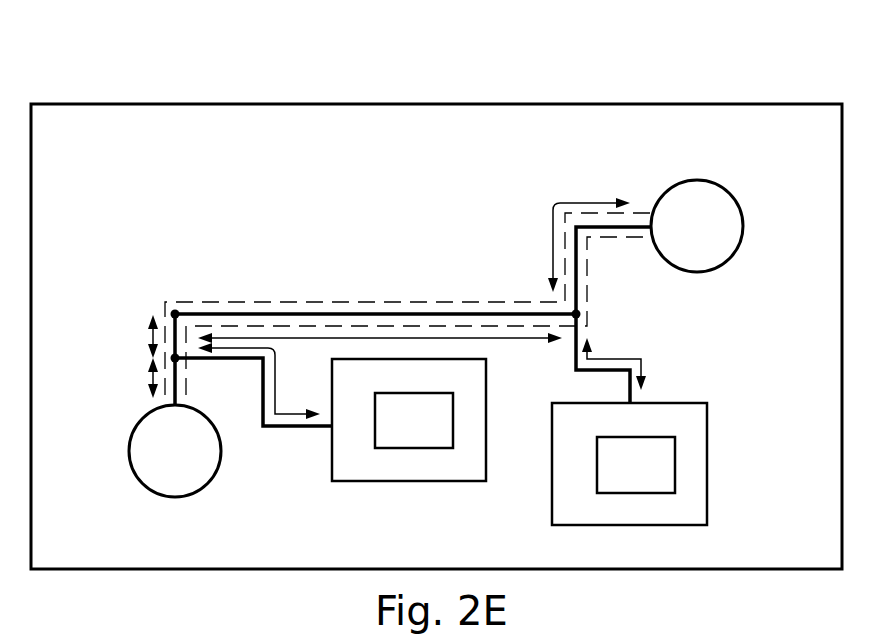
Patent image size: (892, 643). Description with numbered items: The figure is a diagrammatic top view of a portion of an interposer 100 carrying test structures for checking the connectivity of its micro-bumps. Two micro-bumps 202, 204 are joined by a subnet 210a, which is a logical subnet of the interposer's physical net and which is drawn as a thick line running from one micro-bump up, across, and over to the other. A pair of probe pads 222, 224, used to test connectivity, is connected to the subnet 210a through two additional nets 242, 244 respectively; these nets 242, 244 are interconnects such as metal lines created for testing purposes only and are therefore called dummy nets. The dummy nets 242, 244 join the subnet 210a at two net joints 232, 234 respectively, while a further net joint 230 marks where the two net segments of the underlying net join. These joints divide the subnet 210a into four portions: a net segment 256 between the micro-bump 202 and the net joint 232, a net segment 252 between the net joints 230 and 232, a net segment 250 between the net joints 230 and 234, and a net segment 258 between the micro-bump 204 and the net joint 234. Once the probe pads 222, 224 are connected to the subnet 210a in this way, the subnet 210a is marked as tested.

The interposer 100 is at (563, 58).
The micro-bump 202 is at (140, 480).
The micro-bump 204 is at (720, 185).
The subnet 210a is at (333, 303).
The probe pad 222 is at (408, 481).
The probe pad 224 is at (707, 464).
The net joint 230 is at (178, 312).
The net joint 232 is at (178, 361).
The net joint 234 is at (580, 312).
The dummy net 242 is at (292, 425).
The dummy net 244 is at (641, 359).
The net segment 250 is at (507, 338).
The net segment 252 is at (150, 333).
The net segment 256 is at (150, 388).
The net segment 258 is at (552, 242).